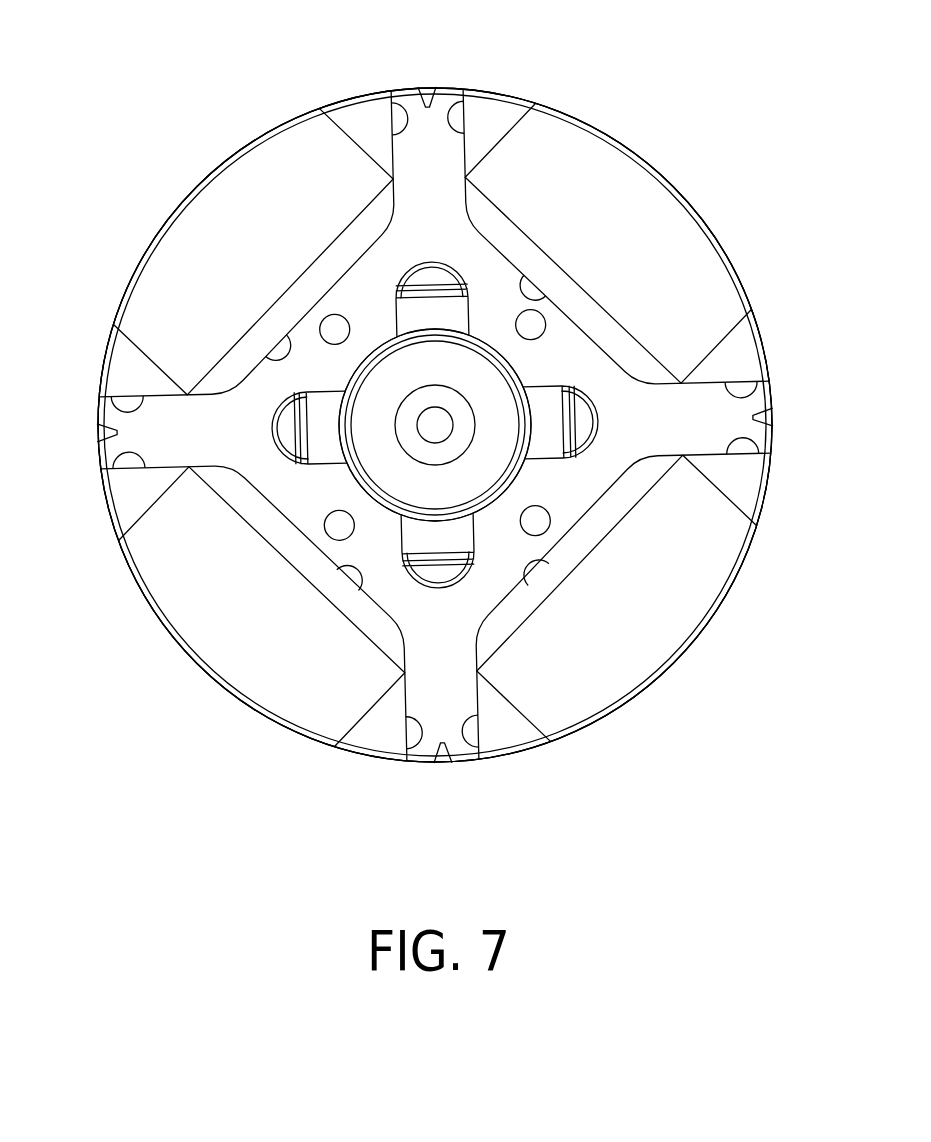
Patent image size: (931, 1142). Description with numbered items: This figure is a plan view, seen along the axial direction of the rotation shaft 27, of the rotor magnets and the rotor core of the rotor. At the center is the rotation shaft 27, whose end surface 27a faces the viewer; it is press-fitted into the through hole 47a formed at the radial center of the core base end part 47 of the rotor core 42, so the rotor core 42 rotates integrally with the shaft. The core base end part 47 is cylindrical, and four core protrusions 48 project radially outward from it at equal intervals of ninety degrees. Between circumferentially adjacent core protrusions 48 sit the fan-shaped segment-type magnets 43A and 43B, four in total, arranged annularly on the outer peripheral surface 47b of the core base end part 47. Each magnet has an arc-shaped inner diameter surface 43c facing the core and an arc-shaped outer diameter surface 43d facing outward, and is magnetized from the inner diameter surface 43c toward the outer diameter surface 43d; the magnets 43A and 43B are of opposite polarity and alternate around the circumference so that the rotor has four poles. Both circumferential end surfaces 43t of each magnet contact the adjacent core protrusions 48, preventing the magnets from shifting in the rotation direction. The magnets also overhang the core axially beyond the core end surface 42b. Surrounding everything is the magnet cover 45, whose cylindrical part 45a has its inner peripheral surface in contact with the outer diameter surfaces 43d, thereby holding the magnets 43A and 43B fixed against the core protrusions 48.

The rotation shaft 27 is at (515, 375).
The end surface 27a is at (493, 462).
The rotor core 42 is at (260, 485).
The core end surface 42b is at (362, 303).
The magnet 43A is at (208, 203).
The magnet 43B is at (697, 250).
The inner diameter surface 43c is at (550, 268).
The outer diameter surface 43d is at (155, 222).
The end surface 43t is at (392, 100).
The magnet cover 45 is at (650, 147).
The cylindrical part 45a is at (435, 425).
The core base end part 47 is at (300, 545).
The through hole 47a is at (262, 513).
The outer peripheral surface 47b is at (297, 577).
The core protrusion 48 is at (428, 105).